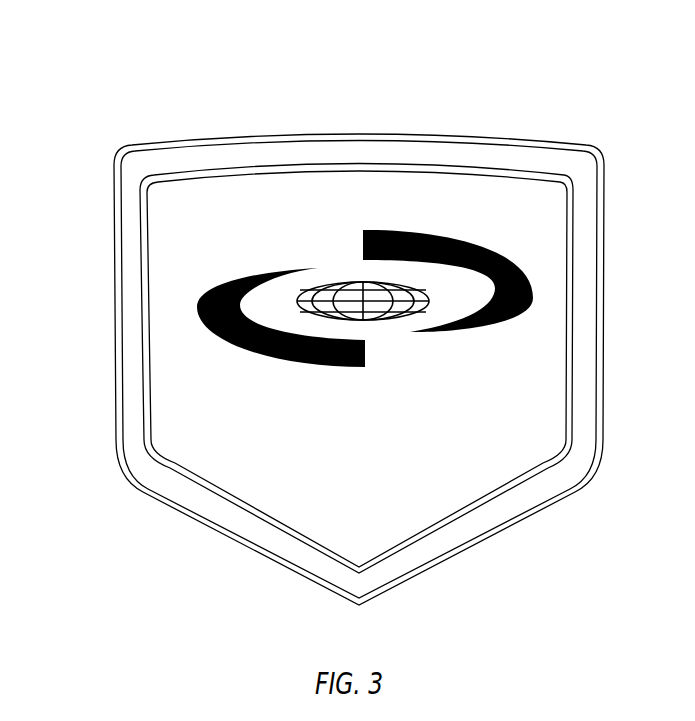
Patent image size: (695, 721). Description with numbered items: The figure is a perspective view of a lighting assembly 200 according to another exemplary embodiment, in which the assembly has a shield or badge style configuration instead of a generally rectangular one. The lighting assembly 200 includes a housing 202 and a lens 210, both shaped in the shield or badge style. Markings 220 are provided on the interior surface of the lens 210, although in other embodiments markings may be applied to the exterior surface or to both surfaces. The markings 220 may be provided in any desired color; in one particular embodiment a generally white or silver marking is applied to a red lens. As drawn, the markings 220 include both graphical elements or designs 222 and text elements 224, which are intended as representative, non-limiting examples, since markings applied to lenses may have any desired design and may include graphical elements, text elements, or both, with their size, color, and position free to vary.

The lighting assembly 200 is at (466, 93).
The housing 202 is at (208, 137).
The lens 210 is at (280, 143).
The markings 220 is at (212, 362).
The graphical elements or designs 222 is at (535, 282).
The text elements 224 is at (177, 242).